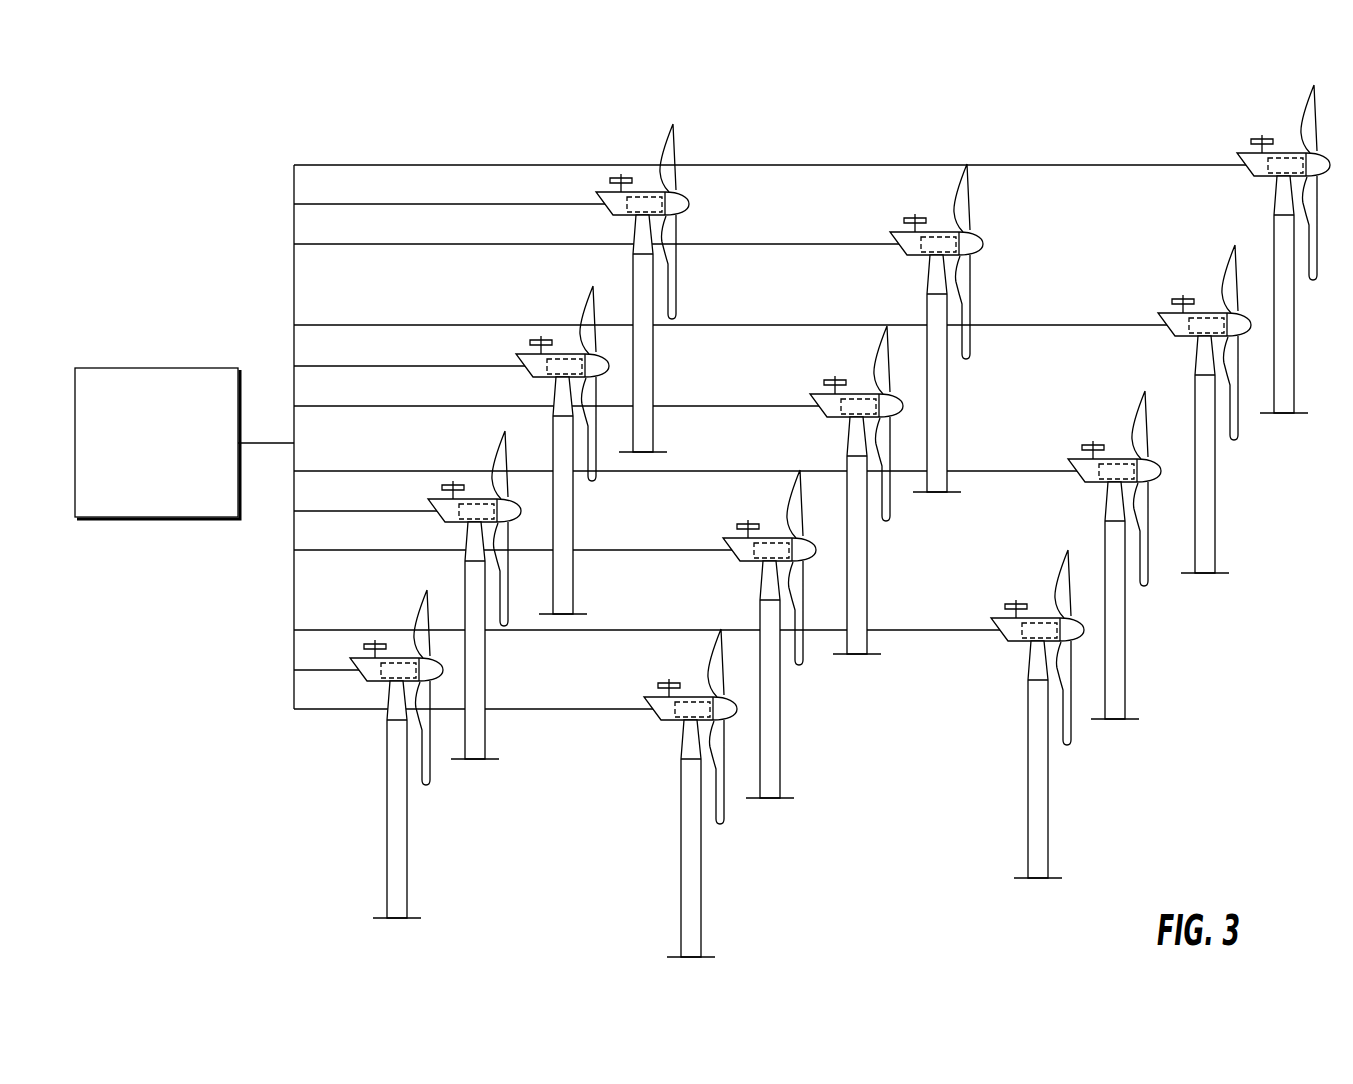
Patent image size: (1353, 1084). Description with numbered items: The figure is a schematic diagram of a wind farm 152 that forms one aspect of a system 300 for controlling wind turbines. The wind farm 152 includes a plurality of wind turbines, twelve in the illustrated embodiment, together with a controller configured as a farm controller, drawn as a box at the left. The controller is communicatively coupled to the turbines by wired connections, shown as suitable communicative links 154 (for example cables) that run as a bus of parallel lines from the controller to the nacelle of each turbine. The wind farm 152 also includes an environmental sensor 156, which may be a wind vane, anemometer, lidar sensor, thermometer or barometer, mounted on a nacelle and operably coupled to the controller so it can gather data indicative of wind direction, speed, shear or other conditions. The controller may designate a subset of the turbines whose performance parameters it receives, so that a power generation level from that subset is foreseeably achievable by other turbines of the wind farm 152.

The system for controlling the wind turbine 300 is at (991, 97).
The wind farm 152 is at (213, 214).
The communicative links 154 is at (450, 244).
The environmental sensor 156 is at (657, 687).